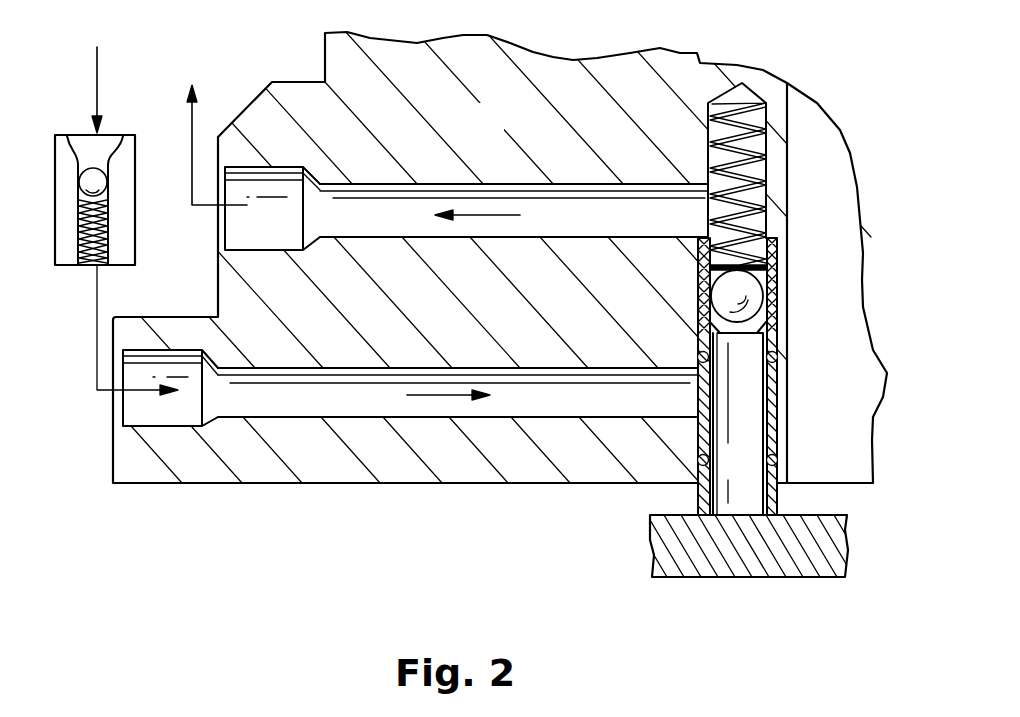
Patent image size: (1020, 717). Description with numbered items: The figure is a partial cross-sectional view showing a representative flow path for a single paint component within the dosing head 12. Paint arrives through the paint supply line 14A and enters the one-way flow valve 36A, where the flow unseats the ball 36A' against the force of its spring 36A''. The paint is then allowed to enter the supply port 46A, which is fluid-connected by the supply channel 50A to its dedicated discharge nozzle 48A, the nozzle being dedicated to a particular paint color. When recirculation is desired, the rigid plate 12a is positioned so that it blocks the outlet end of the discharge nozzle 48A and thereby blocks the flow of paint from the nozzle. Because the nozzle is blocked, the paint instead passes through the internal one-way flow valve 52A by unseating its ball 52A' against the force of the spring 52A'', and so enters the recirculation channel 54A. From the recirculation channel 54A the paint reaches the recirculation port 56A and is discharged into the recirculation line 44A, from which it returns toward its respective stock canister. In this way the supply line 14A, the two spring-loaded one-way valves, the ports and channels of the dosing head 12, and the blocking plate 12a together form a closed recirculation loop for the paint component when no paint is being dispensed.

The dosing head 12 is at (500, 131).
The rigid plate 12a is at (710, 578).
The paint supply line 14A is at (92, 58).
The one-way flow valve 36A is at (116, 170).
The ball 36A' is at (60, 135).
The spring 36A'' is at (105, 297).
The recirculation line 44A is at (208, 205).
The supply port 46A is at (183, 422).
The discharge nozzle 48A is at (760, 471).
The supply channel 50A is at (355, 408).
The internal one-way flow valve 52A is at (808, 300).
The ball 52A' is at (781, 296).
The spring 52A'' is at (784, 151).
The recirculation channel 54A is at (402, 228).
The recirculation port 56A is at (287, 238).